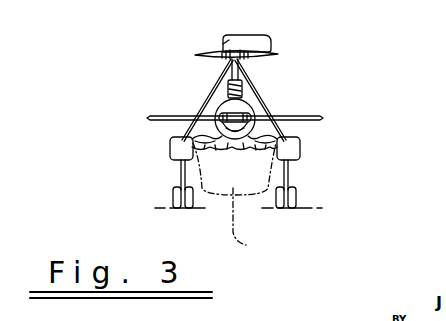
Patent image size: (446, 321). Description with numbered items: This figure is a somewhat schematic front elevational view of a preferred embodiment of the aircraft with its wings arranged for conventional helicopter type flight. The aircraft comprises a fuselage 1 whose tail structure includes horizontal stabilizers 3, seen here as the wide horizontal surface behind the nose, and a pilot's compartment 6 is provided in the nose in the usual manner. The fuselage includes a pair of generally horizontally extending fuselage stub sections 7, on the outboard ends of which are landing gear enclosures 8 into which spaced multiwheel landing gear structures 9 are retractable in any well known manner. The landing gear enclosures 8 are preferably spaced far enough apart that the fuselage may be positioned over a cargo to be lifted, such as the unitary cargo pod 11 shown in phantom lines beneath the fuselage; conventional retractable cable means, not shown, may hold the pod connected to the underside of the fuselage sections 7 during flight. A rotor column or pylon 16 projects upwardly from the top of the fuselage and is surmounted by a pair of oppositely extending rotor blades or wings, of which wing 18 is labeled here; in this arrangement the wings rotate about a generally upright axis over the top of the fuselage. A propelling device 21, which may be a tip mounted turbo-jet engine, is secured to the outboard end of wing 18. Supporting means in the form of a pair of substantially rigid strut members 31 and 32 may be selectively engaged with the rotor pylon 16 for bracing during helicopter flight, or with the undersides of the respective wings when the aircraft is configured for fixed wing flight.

The fuselage 1 is at (229, 148).
The horizontal stabilizers 3 is at (163, 117).
The pilot's compartment 6 is at (230, 111).
The fuselage stub sections 7 is at (202, 147).
The landing gear enclosures 8 is at (170, 143).
The multiwheel landing gear structures 9 is at (174, 191).
The unitary cargo pod 11 is at (234, 200).
The rotor column or pylon 16 is at (242, 92).
The rotor blade or wing 18 is at (267, 51).
The propelling device 21 is at (217, 51).
The strut member 31 is at (203, 108).
The strut member 32 is at (269, 112).